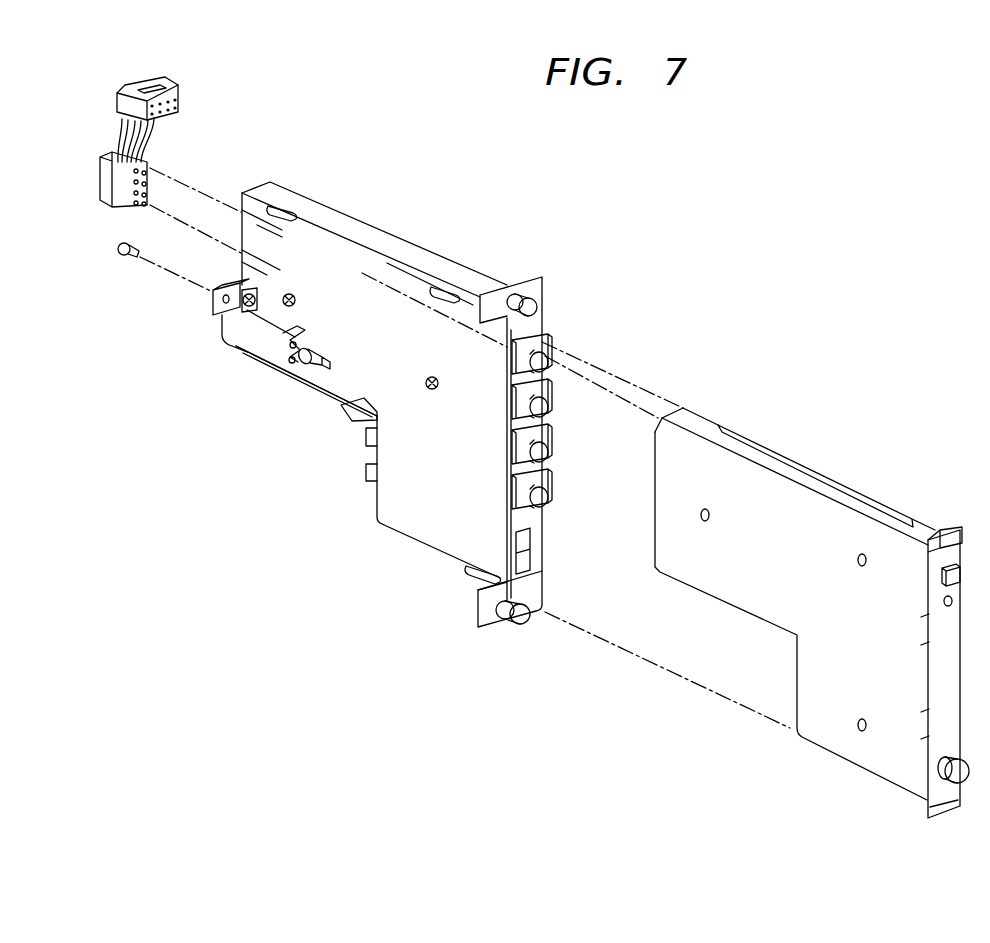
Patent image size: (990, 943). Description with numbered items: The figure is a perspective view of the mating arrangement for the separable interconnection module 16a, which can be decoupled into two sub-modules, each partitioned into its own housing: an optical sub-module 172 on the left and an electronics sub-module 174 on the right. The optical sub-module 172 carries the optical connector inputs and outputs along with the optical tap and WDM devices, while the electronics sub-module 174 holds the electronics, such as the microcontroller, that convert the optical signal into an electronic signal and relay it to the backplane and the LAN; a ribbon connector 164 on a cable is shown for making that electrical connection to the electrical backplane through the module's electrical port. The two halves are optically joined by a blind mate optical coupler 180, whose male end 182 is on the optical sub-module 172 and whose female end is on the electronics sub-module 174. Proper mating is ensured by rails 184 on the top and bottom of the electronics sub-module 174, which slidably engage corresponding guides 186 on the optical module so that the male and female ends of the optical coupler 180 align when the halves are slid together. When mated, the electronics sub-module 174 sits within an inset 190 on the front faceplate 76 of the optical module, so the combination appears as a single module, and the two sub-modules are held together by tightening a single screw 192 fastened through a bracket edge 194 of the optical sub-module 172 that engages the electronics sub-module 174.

The ribbon connector 164 is at (176, 86).
The optical sub-module 172 is at (387, 237).
The front faceplate 76 is at (543, 280).
The guides 186 is at (436, 298).
The inset 190 is at (542, 328).
The rails 184 is at (816, 470).
The electronics sub-module 174 is at (813, 743).
The screw 192 is at (128, 256).
The bracket edge 194 is at (212, 312).
The blind mate optical coupler 180 is at (212, 345).
The male end 182 is at (257, 354).
The interconnection module 16a is at (412, 680).